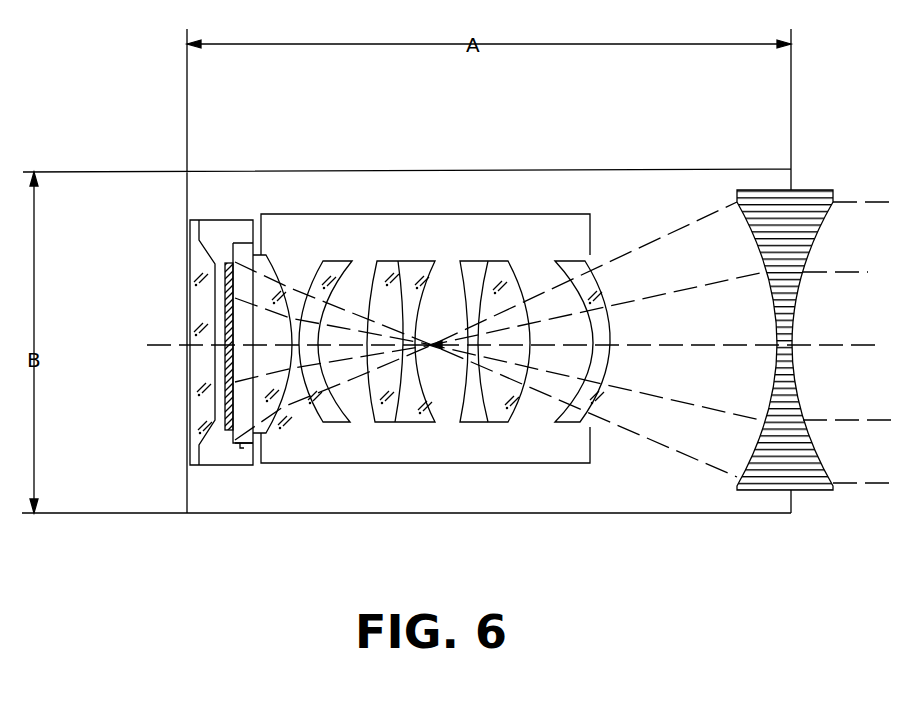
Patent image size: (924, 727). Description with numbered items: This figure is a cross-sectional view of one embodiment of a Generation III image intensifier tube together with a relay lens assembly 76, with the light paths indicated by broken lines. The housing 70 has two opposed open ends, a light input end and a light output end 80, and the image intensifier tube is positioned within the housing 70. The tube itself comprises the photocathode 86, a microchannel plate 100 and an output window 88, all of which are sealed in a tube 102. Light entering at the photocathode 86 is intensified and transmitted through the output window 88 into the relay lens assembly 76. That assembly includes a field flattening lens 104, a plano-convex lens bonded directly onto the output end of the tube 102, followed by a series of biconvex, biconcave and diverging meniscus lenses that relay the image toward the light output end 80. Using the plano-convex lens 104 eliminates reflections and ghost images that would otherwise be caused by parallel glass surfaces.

The housing 70 is at (765, 169).
The relay lens assembly 76 is at (537, 466).
The light output end 80 is at (817, 490).
The photocathode 86 is at (193, 368).
The output window 88 is at (241, 443).
The microchannel plate 100 is at (200, 441).
The tube 102 is at (240, 465).
The field flattening lens 104 is at (268, 430).